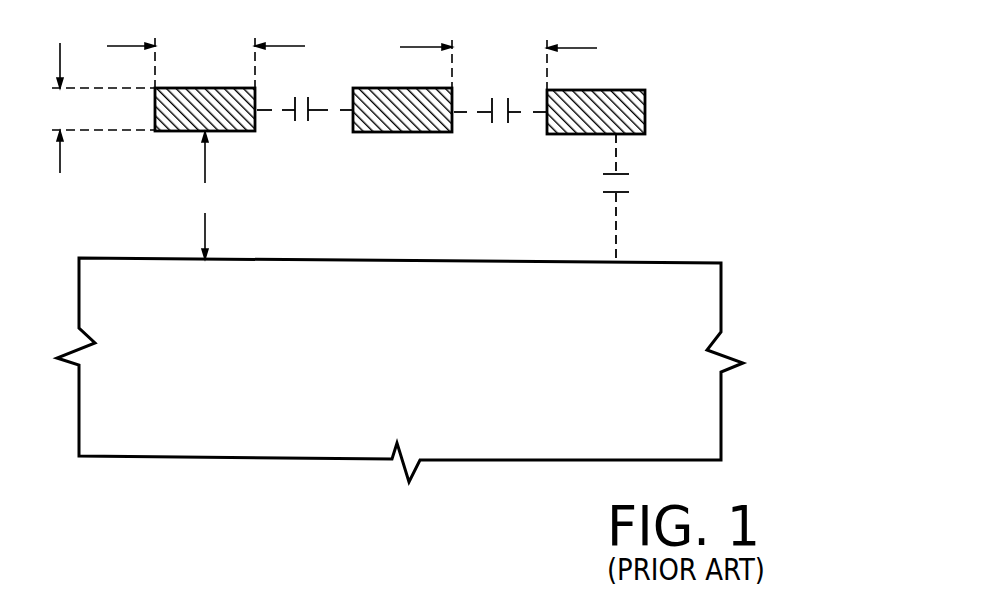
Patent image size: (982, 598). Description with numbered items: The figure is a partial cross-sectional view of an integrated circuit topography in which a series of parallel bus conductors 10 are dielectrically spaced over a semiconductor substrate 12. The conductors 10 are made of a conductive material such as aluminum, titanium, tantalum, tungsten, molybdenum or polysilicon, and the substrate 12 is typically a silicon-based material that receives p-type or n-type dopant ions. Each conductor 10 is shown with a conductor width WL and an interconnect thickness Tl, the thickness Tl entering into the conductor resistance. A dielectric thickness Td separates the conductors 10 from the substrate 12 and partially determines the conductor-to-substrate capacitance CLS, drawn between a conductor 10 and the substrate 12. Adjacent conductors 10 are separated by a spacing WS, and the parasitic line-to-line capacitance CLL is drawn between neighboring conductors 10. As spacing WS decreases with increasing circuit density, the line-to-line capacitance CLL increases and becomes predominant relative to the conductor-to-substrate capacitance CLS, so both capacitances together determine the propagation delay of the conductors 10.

The conductors 10 is at (235, 132).
The semiconductor substrate 12 is at (597, 437).
The line-to-line capacitance CLL is at (402, 130).
The conductor-to-substrate capacitance CLS is at (642, 198).
The interconnect thickness Tl is at (89, 108).
The conductor width WL is at (279, 63).
The spacing between conductors WS is at (543, 65).
The dielectric thickness Td is at (204, 195).